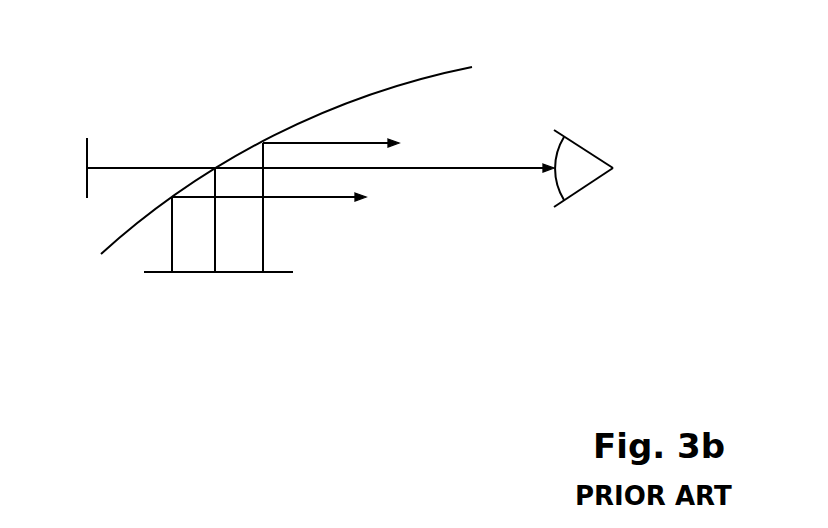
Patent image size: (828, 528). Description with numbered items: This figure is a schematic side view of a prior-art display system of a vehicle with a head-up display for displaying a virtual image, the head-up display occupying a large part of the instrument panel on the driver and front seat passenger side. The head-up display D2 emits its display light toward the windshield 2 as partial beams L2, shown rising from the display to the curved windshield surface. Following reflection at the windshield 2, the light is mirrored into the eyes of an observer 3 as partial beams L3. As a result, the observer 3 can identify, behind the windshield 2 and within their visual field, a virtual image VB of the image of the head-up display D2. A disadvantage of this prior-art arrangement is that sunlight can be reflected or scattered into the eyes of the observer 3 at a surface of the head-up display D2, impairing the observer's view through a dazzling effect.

The virtual image VB is at (86, 152).
The windshield 2 is at (308, 118).
The head-up display D2 is at (162, 275).
The partial beams L2 is at (172, 257).
The partial beams L3 is at (374, 141).
The observer 3 is at (588, 160).